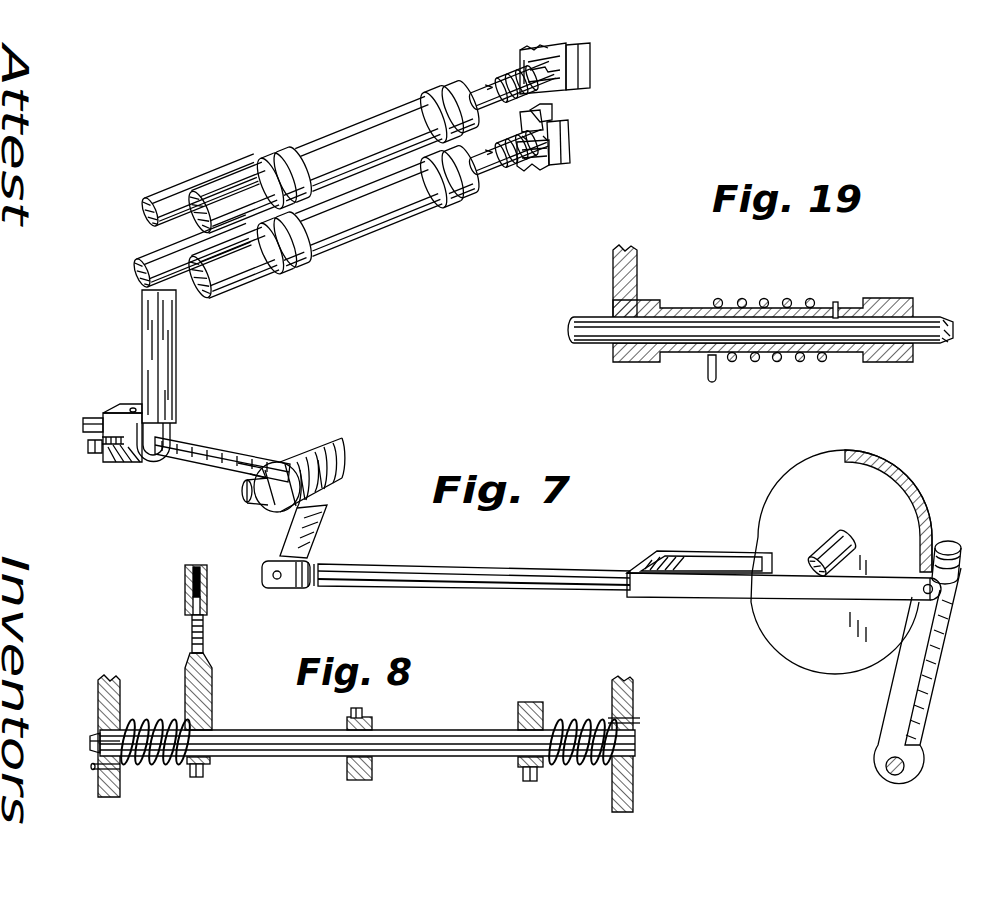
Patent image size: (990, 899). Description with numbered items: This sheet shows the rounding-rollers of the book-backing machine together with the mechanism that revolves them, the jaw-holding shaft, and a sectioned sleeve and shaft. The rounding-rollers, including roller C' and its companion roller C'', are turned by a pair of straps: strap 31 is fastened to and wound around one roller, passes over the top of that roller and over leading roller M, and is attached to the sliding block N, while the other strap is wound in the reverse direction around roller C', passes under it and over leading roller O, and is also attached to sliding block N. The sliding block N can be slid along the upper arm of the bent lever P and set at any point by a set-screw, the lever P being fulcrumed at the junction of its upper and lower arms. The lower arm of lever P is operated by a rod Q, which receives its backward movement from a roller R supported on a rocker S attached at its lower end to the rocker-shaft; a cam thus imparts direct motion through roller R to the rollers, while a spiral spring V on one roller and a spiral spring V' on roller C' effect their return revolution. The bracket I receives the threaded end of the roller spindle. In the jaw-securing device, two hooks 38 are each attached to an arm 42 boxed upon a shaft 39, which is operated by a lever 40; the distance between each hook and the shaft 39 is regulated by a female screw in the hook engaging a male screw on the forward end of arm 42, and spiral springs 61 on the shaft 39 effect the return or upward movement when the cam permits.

In FIG. 7, the rounding-roller C' is at (372, 142).
In FIG. 7, the lower cylinder C'' is at (368, 209).
In FIG. 7, the spiral spring V' is at (512, 117).
In FIG. 7, the bracket I is at (553, 107).
In FIG. 7, the leading roller M is at (193, 191).
In FIG. 7, the leading roller O is at (182, 252).
In FIG. 7, the strap 31 is at (142, 356).
In FIG. 7, the sliding block N is at (126, 433).
In FIG. 7, the bent lever P is at (250, 494).
In FIG. 7, the rod Q is at (446, 571).
In FIG. 7, the roller R is at (801, 570).
In FIG. 7, the spiral spring V is at (841, 562).
In FIG. 7, the rocker S is at (917, 676).
In FIG. 8, the shaft 39 is at (365, 744).
In FIG. 8, the spiral spring 61 is at (368, 731).
In FIG. 8, the hook 38 is at (179, 609).
In FIG. 8, the arm 42 is at (364, 717).
In FIG. 8, the lever 40 is at (367, 755).